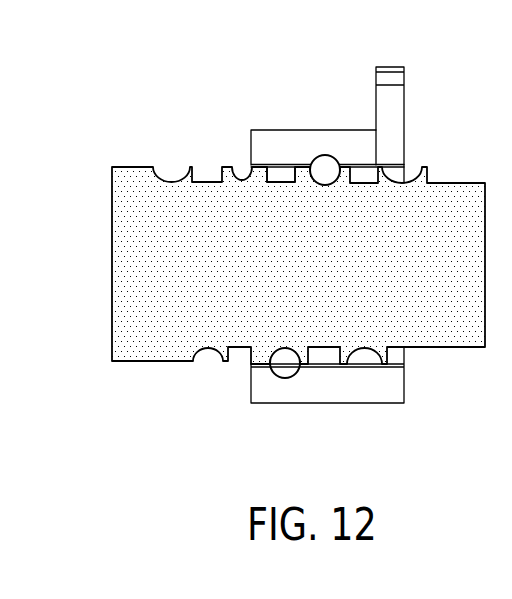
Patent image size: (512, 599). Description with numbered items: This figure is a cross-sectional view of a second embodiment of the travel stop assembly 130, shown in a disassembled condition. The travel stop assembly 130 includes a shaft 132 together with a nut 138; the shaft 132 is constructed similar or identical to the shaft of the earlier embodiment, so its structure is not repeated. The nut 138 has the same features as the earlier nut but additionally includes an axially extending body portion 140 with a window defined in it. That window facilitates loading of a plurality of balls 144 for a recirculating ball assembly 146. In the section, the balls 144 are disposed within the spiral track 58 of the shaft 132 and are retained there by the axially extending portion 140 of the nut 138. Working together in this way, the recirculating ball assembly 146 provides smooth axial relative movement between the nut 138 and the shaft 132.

The travel stop assembly 130 is at (184, 113).
The shaft 132 is at (130, 313).
The spiral track 58 is at (267, 167).
The axially extending body portion 140 is at (280, 142).
The nut 138 is at (359, 92).
The balls 144 is at (327, 170).
The recirculating ball assembly 146 is at (235, 369).